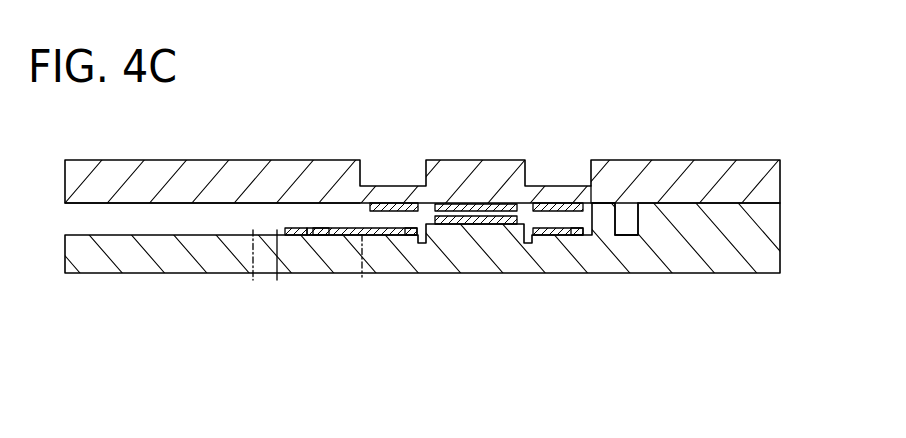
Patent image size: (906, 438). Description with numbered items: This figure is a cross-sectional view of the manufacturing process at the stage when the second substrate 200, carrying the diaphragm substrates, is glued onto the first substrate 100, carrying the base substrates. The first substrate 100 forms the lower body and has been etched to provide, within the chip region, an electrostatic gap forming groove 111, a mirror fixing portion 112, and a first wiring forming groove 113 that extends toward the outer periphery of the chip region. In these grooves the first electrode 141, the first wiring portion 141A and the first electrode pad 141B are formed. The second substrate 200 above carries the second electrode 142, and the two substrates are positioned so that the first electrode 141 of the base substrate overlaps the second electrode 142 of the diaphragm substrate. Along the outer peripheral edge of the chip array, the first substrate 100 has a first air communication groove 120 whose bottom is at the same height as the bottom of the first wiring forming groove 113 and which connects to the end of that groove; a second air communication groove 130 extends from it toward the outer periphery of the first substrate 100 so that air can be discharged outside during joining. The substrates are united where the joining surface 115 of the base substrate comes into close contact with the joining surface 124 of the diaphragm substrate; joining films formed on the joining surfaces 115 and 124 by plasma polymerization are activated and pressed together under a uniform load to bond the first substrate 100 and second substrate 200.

The first substrate 100 is at (758, 274).
The second substrate 200 is at (765, 167).
The electrostatic gap forming groove 111 is at (413, 230).
The mirror fixing portion 112 is at (521, 224).
The first wiring forming groove 113 is at (322, 230).
The joining surface 115 is at (617, 205).
The first air communication groove 120 is at (263, 234).
The joining surface 124 is at (592, 202).
The second air communication groove 130 is at (112, 232).
The first electrode 141 is at (422, 280).
The first wiring portion 141A is at (362, 280).
The first electrode pad 141B is at (293, 229).
The second electrode 142 is at (388, 204).